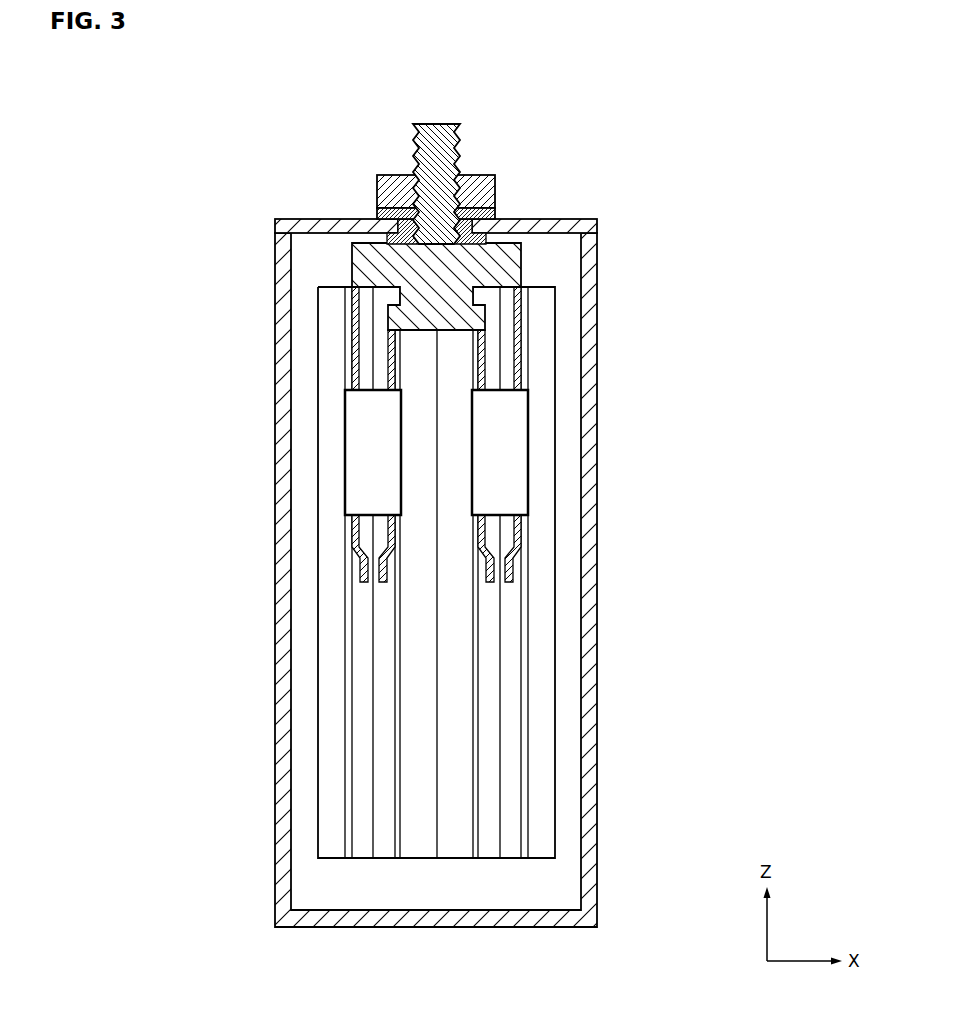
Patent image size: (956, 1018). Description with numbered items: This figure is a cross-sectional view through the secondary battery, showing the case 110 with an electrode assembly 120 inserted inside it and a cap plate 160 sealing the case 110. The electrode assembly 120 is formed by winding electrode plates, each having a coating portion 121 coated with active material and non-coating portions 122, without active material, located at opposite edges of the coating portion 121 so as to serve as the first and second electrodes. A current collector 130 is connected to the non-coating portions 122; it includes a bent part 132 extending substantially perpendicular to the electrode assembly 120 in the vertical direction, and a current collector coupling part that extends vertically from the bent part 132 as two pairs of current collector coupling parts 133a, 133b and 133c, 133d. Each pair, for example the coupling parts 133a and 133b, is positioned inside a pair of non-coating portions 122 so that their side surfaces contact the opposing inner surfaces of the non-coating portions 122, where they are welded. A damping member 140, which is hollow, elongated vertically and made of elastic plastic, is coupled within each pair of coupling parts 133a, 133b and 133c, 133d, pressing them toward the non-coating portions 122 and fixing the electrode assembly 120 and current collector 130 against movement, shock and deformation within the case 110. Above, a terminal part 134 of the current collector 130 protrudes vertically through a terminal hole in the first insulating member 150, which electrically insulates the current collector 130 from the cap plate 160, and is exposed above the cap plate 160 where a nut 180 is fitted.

The case 110 is at (590, 850).
The electrode assembly 120 is at (533, 598).
The coating portion 121 is at (543, 695).
The non-coating portion 122 is at (527, 747).
The current collector 130 is at (348, 238).
The bent part 132 is at (513, 265).
The current collector coupling part 133a is at (514, 316).
The current collector coupling part 133b is at (484, 357).
The current collector coupling part 133c is at (357, 331).
The current collector coupling part 133d is at (392, 372).
The terminal part 134 is at (434, 127).
The damping member 140 is at (368, 470).
The first insulating member 150 is at (497, 214).
The cap plate 160 is at (559, 226).
The nut 180 is at (394, 186).